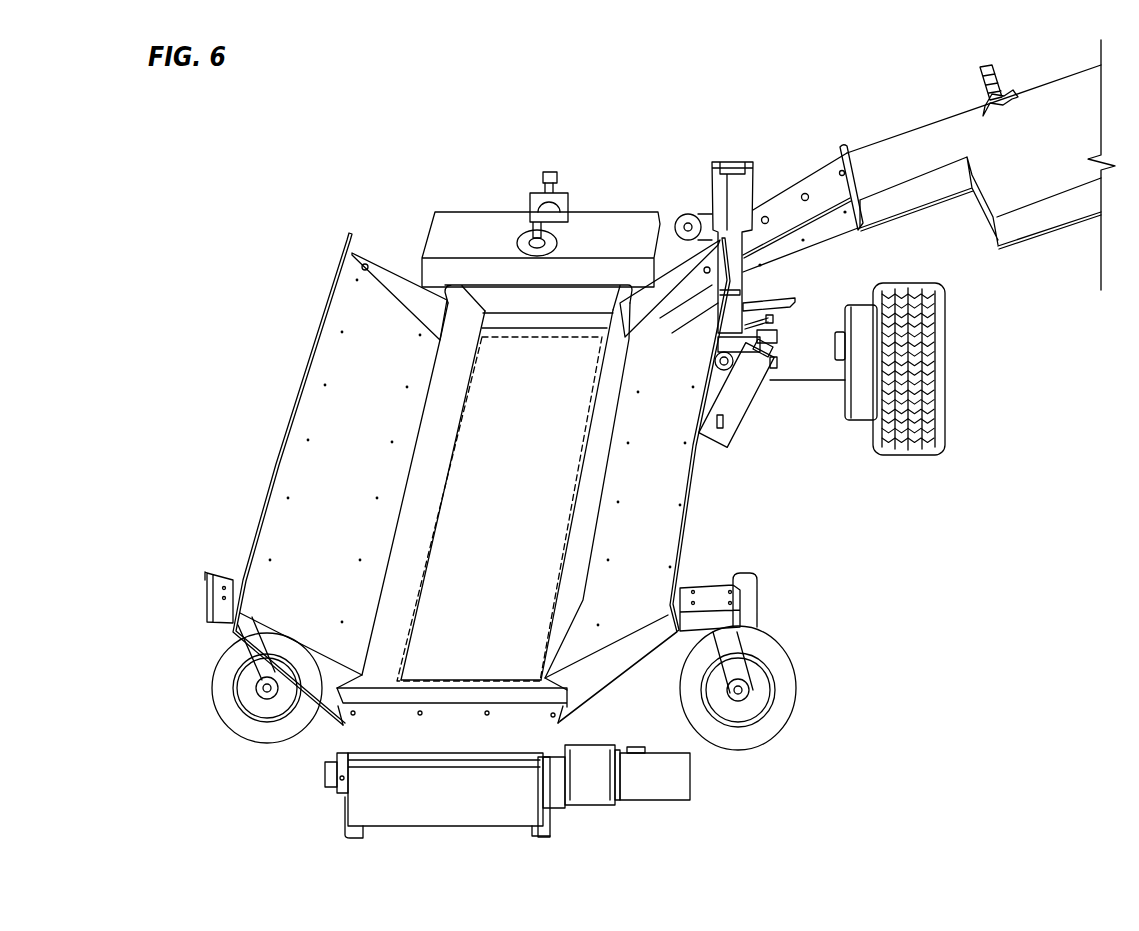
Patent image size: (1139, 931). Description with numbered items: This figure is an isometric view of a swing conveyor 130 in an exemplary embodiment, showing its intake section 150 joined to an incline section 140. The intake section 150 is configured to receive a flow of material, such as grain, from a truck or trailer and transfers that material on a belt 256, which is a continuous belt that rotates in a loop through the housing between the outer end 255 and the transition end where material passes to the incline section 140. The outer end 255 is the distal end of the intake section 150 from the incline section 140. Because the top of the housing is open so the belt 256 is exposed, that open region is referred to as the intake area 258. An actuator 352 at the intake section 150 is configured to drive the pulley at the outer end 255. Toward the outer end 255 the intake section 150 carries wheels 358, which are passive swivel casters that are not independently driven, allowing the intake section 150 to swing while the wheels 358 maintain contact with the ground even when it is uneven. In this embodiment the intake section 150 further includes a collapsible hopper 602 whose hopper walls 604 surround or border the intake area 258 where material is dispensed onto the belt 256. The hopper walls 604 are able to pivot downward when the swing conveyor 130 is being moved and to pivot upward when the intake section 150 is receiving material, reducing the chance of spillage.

The swing conveyor 130 is at (160, 178).
The incline section 140 is at (881, 118).
The intake section 150 is at (842, 527).
The outer end 255 is at (325, 829).
The belt 256 is at (493, 516).
The intake area 258 is at (470, 408).
The actuator 352 is at (669, 790).
The wheels 358 is at (233, 718).
The collapsible hopper 602 is at (243, 367).
The hopper walls 604 is at (280, 454).